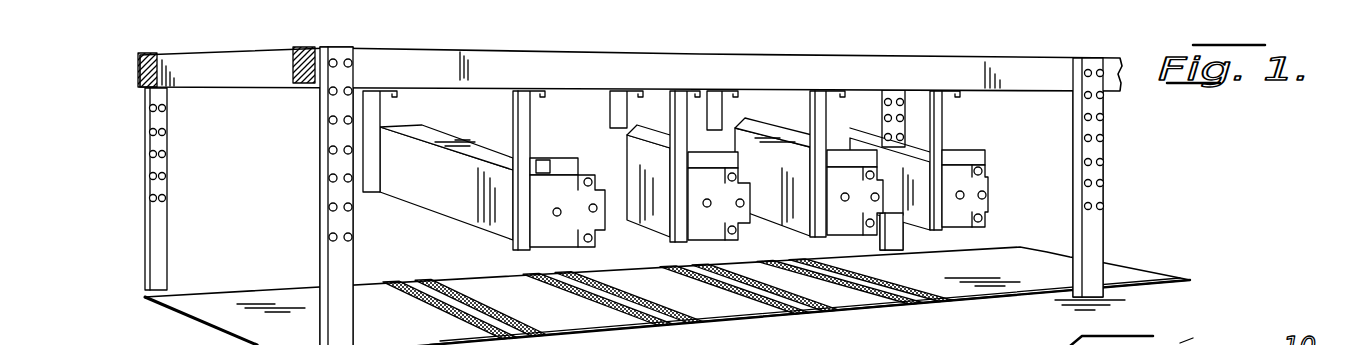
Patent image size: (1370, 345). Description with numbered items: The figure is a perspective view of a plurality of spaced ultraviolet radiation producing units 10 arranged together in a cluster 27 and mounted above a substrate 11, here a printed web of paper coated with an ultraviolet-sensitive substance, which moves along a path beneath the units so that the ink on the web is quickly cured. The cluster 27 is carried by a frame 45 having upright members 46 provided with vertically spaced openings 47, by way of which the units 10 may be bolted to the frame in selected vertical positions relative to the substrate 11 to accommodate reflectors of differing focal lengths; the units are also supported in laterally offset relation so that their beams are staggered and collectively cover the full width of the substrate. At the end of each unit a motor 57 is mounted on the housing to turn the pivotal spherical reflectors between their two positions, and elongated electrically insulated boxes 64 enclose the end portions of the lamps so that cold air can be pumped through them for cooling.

The unit 10 is at (440, 221).
The substrate 11 is at (240, 325).
The cluster 27 is at (912, 56).
The frame 45 is at (503, 40).
The upright members 46 is at (321, 219).
The openings 47 is at (330, 152).
The motor 57 is at (543, 168).
The electrically insulated boxes 64 is at (596, 181).